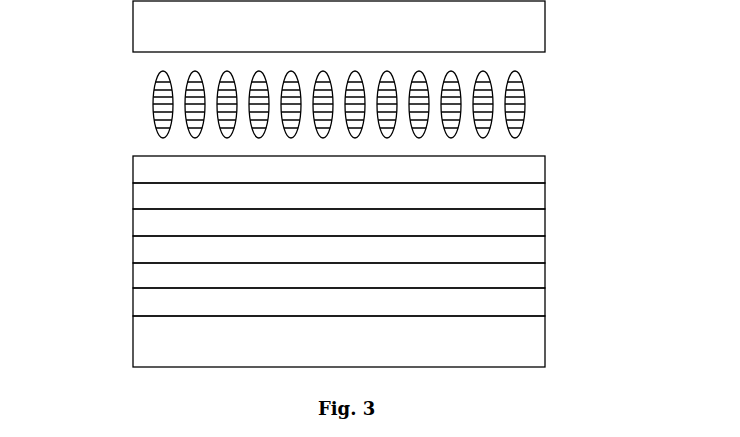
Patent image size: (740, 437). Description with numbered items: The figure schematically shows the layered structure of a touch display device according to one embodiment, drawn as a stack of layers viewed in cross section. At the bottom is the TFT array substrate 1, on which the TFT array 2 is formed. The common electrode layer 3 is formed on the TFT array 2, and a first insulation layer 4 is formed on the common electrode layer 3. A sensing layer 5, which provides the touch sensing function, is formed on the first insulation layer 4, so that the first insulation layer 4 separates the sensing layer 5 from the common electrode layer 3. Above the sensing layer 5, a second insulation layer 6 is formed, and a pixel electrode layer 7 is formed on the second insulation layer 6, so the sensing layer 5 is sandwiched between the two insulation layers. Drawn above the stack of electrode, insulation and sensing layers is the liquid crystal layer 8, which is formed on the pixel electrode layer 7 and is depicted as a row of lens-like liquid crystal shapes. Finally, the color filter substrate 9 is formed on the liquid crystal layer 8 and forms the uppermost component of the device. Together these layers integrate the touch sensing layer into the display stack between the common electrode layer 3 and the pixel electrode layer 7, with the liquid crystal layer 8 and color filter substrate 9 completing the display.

The TFT array substrate 1 is at (548, 342).
The TFT array 2 is at (548, 302).
The common electrode layer 3 is at (131, 275).
The first insulation layer 4 is at (548, 248).
The sensing layer 5 is at (131, 222).
The second insulation layer 6 is at (548, 196).
The pixel electrode layer 7 is at (131, 168).
The liquid crystal layer 8 is at (513, 107).
The color filter substrate 9 is at (548, 25).